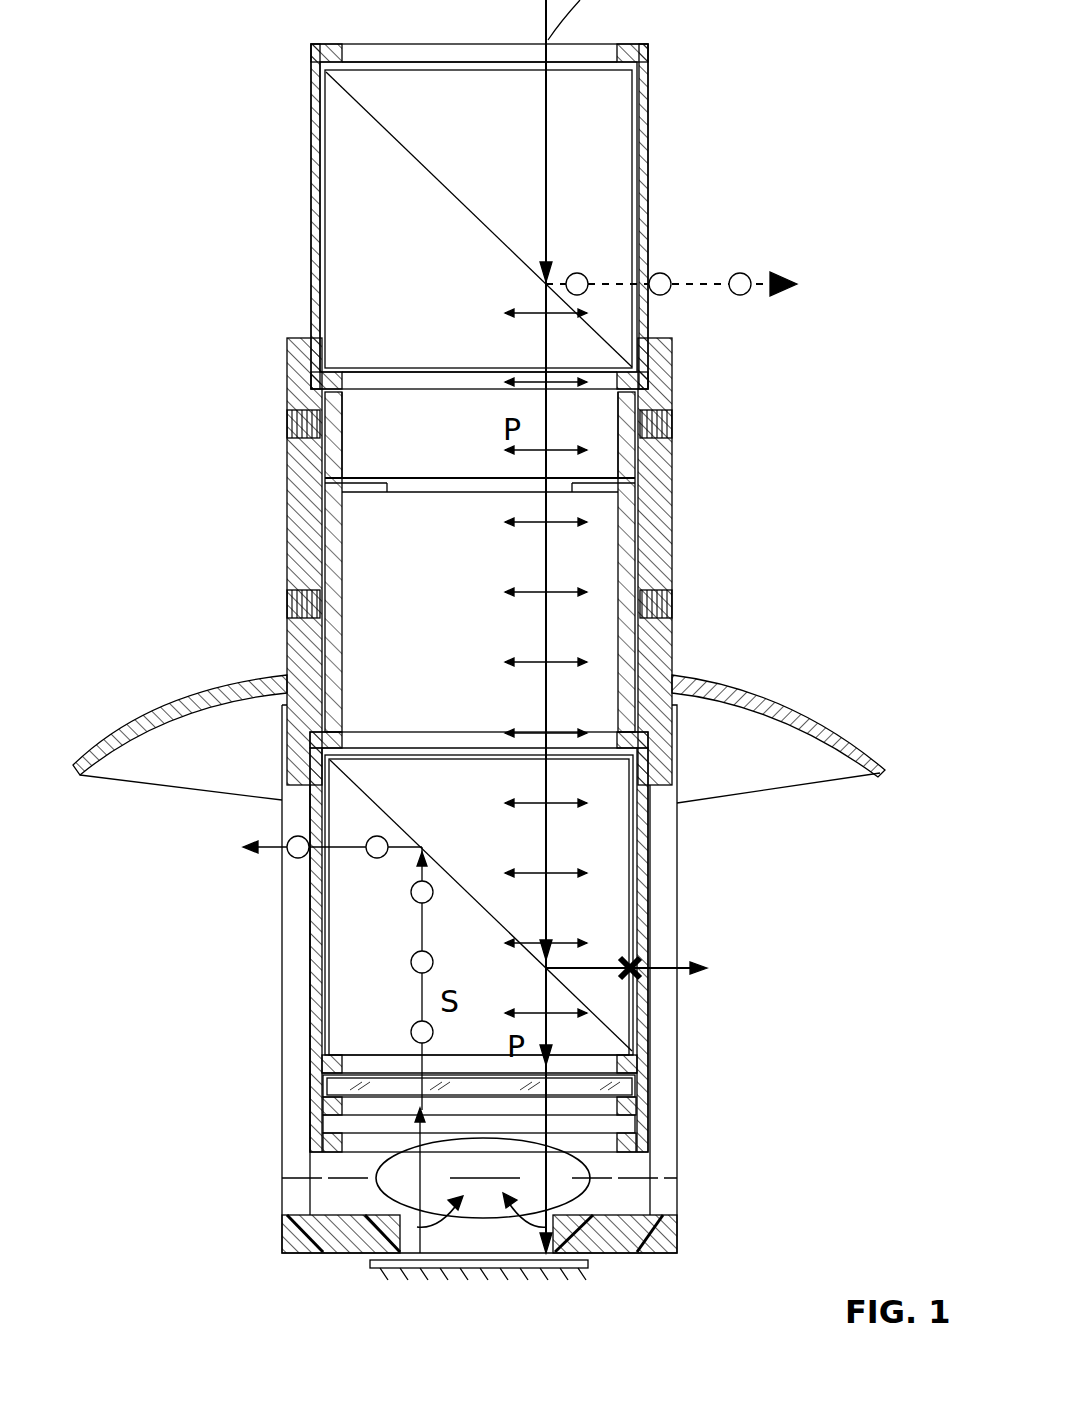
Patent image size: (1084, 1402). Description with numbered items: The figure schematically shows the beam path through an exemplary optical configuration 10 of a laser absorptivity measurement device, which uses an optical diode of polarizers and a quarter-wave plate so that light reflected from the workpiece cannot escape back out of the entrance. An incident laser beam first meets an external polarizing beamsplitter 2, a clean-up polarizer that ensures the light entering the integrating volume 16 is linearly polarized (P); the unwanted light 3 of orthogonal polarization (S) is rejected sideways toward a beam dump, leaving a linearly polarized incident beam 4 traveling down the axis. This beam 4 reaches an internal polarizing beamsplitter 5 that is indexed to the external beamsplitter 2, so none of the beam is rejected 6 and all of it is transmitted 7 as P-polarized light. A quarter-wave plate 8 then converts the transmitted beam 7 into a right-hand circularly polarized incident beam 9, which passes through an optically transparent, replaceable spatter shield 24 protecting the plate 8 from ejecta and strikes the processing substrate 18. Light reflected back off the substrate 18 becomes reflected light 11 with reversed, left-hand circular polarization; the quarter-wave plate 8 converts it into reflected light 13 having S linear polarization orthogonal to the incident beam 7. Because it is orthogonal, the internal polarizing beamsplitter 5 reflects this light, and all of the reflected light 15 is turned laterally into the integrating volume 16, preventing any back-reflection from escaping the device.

The optical configuration 10 is at (237, 42).
The external polarizing beamsplitter 2 is at (505, 247).
The unwanted light 3 is at (698, 288).
The linearly polarized incident beam 4 is at (543, 347).
The integrating volume 16 is at (197, 690).
The reflected light 15 is at (246, 852).
The internal polarizing beamsplitter 5 is at (492, 920).
The reflected light 13 is at (420, 995).
The rejected light 6 is at (700, 962).
The transmitted linearly polarized incident beam 7 is at (550, 1045).
The quarter-wave plate 8 is at (570, 1100).
The spatter shield 24 is at (550, 1138).
The reflected light 11 is at (417, 1237).
The circularly polarized incident beam 9 is at (550, 1232).
The processing substrate 18 is at (413, 1298).